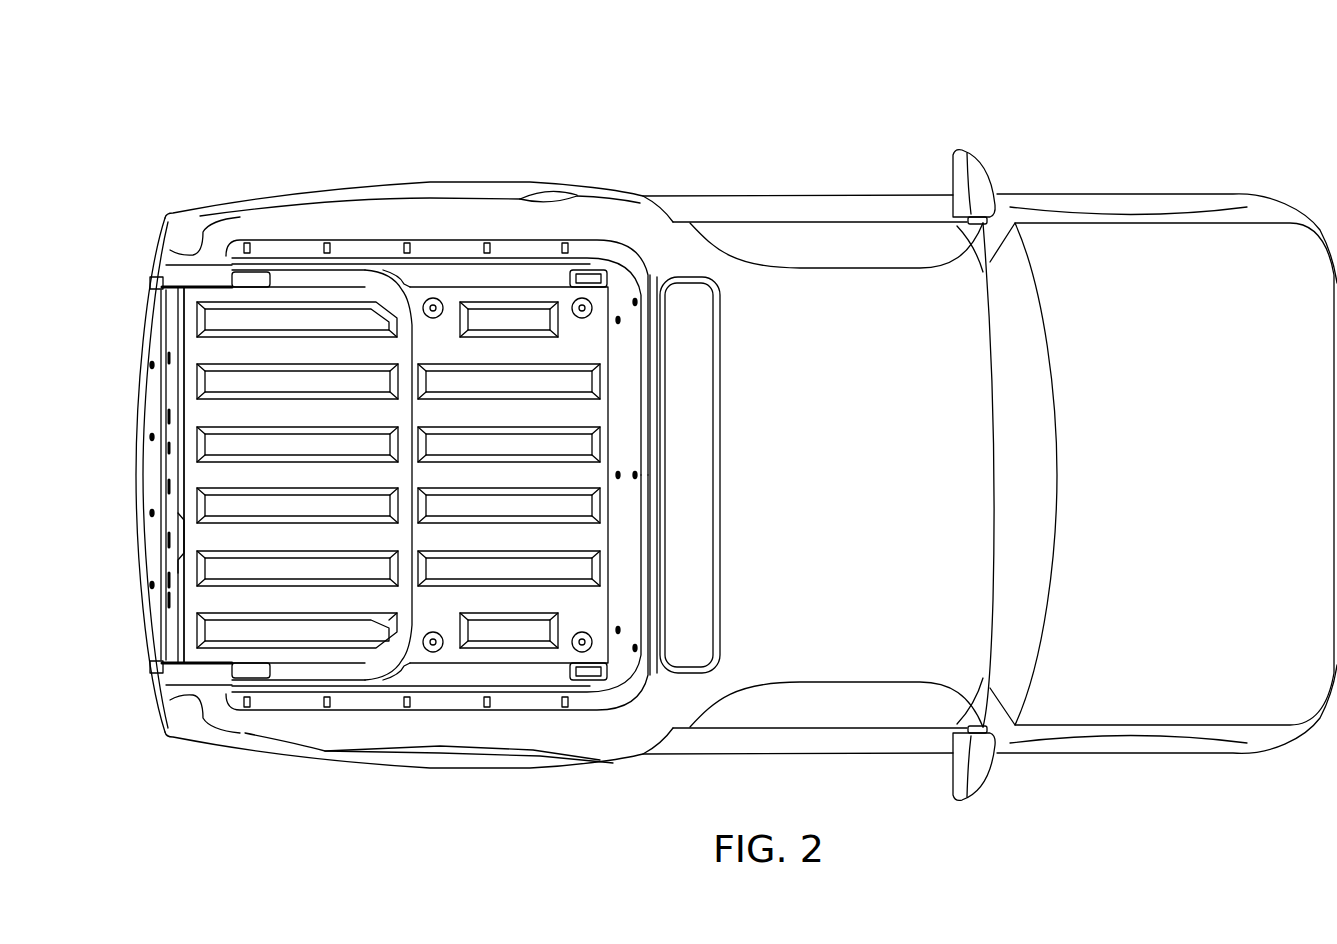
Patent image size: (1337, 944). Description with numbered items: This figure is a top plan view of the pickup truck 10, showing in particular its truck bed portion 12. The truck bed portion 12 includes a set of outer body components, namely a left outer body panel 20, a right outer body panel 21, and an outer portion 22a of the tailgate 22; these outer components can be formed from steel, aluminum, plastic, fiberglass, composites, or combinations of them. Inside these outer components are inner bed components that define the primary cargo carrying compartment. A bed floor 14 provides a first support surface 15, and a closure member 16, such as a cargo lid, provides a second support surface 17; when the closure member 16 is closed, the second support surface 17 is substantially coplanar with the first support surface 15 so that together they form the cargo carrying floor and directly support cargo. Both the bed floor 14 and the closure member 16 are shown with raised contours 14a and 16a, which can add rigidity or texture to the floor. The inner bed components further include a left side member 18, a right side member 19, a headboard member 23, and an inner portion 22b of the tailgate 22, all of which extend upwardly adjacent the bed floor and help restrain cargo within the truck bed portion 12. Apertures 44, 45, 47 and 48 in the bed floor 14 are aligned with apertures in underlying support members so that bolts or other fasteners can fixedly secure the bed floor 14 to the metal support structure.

The vehicle 10 is at (990, 433).
The truck bed portion 12 is at (419, 419).
The bed floor 14 is at (576, 539).
The raised contours 14a is at (500, 380).
The first support surface 15 is at (520, 487).
The closure member 16 is at (192, 603).
The raised contours 16a is at (282, 310).
The second support surface 17 is at (296, 487).
The left side member 18 is at (487, 270).
The right side member 19 is at (523, 682).
The left outer body panel 20 is at (418, 217).
The right outer body panel 21 is at (417, 740).
The tailgate 22 is at (150, 475).
The tailgate portion 22a is at (137, 392).
The tailgate portion 22b is at (165, 372).
The headboard member 23 is at (630, 600).
The aperture 44 is at (582, 318).
The aperture 45 is at (433, 318).
The aperture 47 is at (582, 632).
The aperture 48 is at (433, 632).